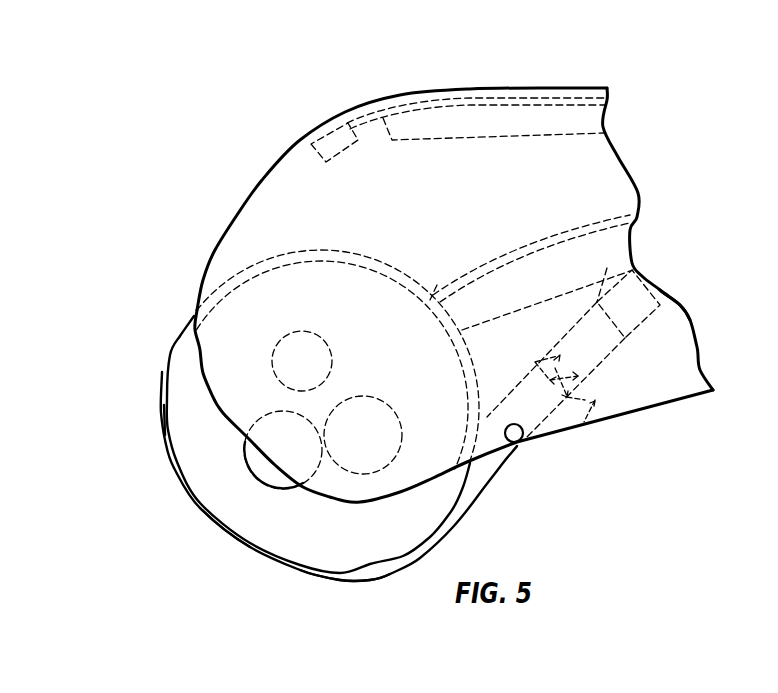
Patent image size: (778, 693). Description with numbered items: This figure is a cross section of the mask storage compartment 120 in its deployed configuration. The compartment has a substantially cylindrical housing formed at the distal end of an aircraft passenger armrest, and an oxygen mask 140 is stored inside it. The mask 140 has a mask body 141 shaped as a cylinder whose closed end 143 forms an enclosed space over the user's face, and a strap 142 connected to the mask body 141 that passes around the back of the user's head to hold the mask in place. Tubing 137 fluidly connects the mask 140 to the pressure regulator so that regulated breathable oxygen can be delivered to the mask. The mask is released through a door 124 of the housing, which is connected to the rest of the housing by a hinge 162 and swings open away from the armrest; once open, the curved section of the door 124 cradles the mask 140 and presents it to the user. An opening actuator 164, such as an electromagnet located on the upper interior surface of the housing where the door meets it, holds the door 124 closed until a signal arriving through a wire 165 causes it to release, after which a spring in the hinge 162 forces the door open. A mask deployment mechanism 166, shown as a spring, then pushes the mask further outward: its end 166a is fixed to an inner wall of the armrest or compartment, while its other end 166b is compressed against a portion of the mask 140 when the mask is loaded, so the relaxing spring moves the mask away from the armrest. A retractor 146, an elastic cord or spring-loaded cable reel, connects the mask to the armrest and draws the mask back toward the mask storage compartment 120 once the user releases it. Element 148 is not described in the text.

The mask storage compartment 120 is at (228, 553).
The door 124 is at (158, 377).
The tubing 137 is at (507, 247).
The mask 140 is at (200, 472).
The mask body 141 is at (338, 574).
The strap 142 is at (268, 262).
The closed end 143 is at (163, 420).
The retractor 146 is at (685, 307).
The aperture 148 is at (607, 268).
The hinge 162 is at (518, 443).
The opening actuator 164 is at (332, 140).
The wire 165 is at (468, 103).
The mask deployment mechanism 166 is at (587, 400).
The end 166a is at (593, 417).
The other end 166b is at (535, 360).